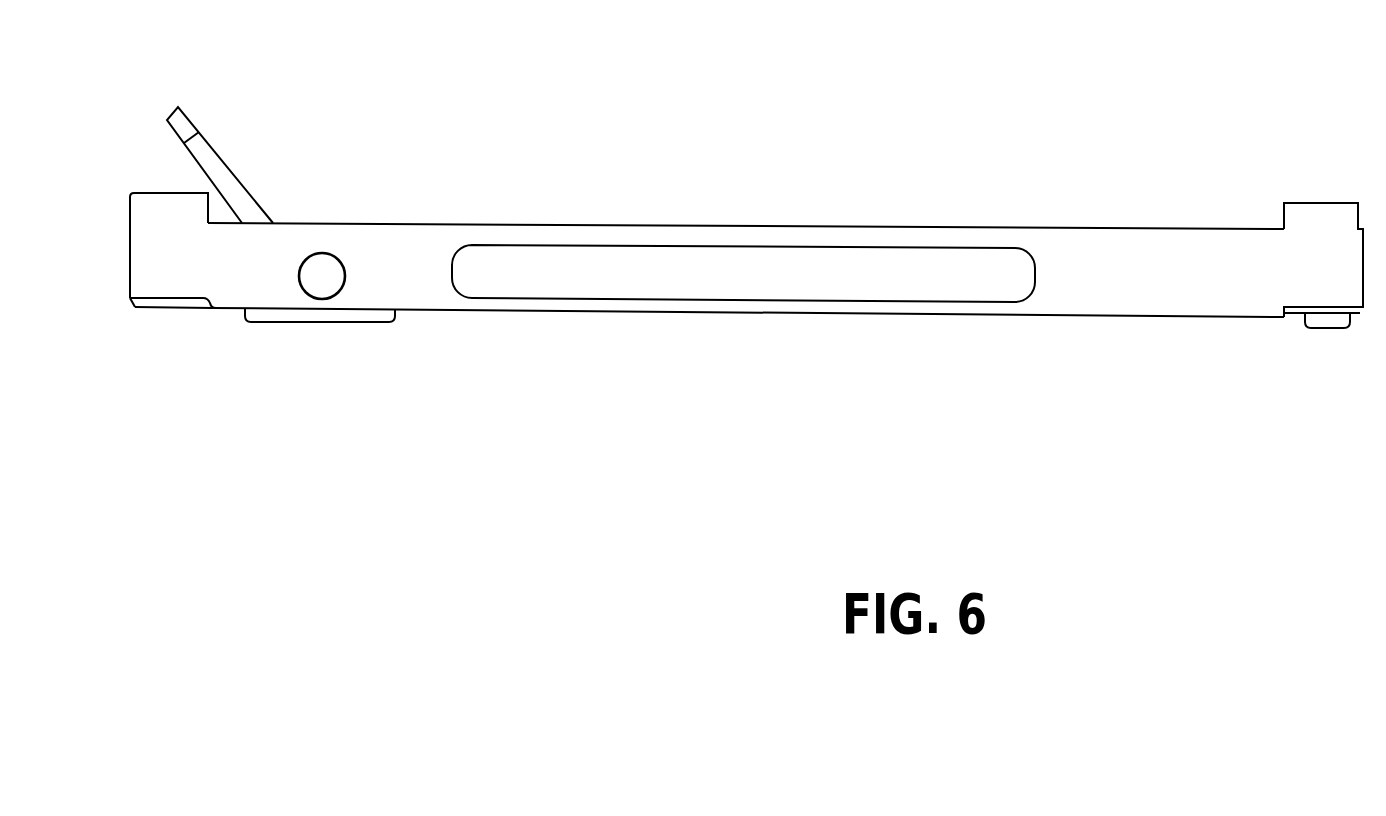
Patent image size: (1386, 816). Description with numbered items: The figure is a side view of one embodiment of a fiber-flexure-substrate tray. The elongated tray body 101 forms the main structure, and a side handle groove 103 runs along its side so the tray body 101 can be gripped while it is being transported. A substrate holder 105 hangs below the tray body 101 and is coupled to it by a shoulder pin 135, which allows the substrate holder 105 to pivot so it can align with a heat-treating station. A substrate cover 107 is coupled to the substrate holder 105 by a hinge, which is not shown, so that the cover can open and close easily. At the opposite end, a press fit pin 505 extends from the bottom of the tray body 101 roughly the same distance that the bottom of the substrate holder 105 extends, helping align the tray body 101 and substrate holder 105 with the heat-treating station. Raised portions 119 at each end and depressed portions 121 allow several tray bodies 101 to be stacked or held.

The tray body 101 is at (1180, 300).
The side handle groove 103 is at (692, 283).
The substrate holder 105 is at (307, 322).
The substrate cover 107 is at (185, 112).
The raised portions 119 is at (155, 210).
The depressed portions 121 is at (136, 306).
The shoulder pin 135 is at (328, 268).
The press fit pin 505 is at (1338, 328).